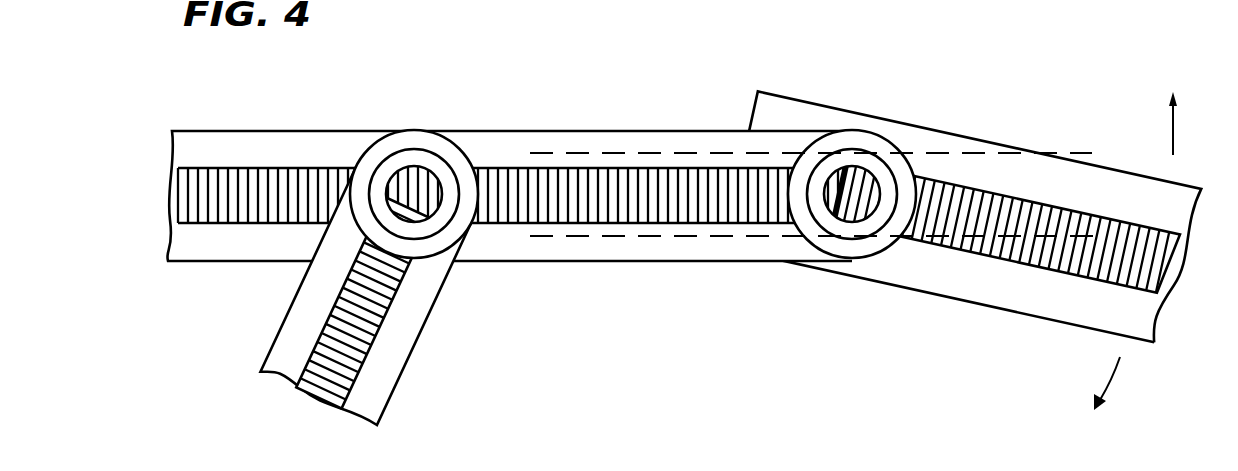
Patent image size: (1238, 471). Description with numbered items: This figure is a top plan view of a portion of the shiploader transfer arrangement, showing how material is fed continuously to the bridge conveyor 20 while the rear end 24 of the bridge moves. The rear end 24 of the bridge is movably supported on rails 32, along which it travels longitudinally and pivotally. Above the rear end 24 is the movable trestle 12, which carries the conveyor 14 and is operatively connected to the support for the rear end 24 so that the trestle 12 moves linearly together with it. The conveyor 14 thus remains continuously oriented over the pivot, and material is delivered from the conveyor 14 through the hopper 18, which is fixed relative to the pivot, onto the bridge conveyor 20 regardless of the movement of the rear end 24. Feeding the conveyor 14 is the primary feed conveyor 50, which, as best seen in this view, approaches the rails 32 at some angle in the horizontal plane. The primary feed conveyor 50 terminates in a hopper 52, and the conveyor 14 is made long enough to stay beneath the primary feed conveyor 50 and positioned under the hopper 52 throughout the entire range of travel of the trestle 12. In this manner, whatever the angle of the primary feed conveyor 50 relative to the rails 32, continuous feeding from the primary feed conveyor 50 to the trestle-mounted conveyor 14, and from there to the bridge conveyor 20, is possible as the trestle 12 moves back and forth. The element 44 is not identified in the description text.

The trestle 12 is at (509, 195).
The conveyor 14 is at (630, 219).
The hopper 18 is at (853, 192).
The bridge conveyor 20 is at (957, 238).
The rear end of the bridge 24 is at (1038, 308).
The rails 32 is at (583, 237).
The pivot pin 44 is at (852, 196).
The primary feed conveyor 50 is at (387, 314).
The hopper 52 is at (377, 142).